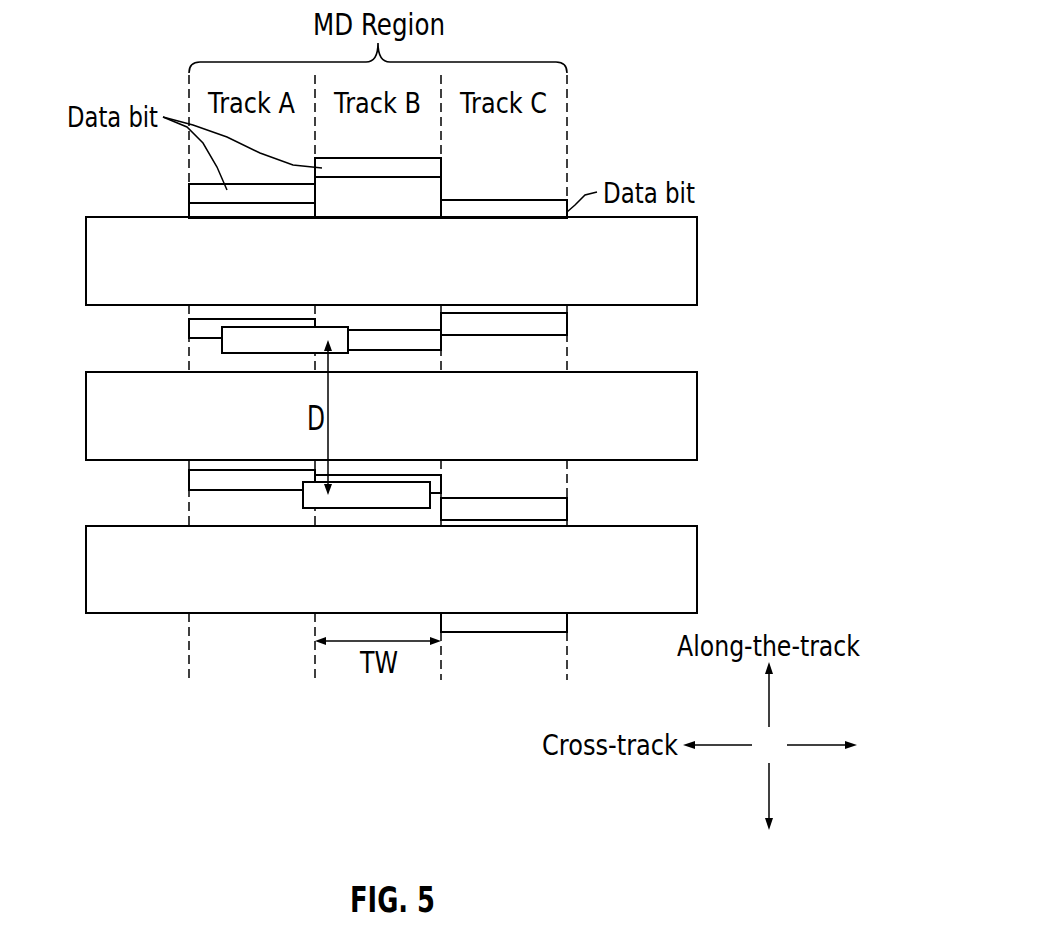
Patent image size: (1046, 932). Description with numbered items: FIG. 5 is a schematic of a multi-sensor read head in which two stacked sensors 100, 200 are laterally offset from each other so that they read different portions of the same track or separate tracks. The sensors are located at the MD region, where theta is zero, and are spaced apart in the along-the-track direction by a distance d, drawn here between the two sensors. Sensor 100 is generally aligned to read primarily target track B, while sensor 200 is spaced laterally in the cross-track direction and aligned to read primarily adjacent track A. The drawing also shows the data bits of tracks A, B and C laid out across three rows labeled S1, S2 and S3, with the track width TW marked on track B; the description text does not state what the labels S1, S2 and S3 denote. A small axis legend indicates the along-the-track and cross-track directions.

The sensor 100 is at (392, 498).
The sensor 200 is at (258, 342).
The first sector S1 is at (690, 571).
The second sector S2 is at (690, 416).
The third sector S3 is at (690, 260).